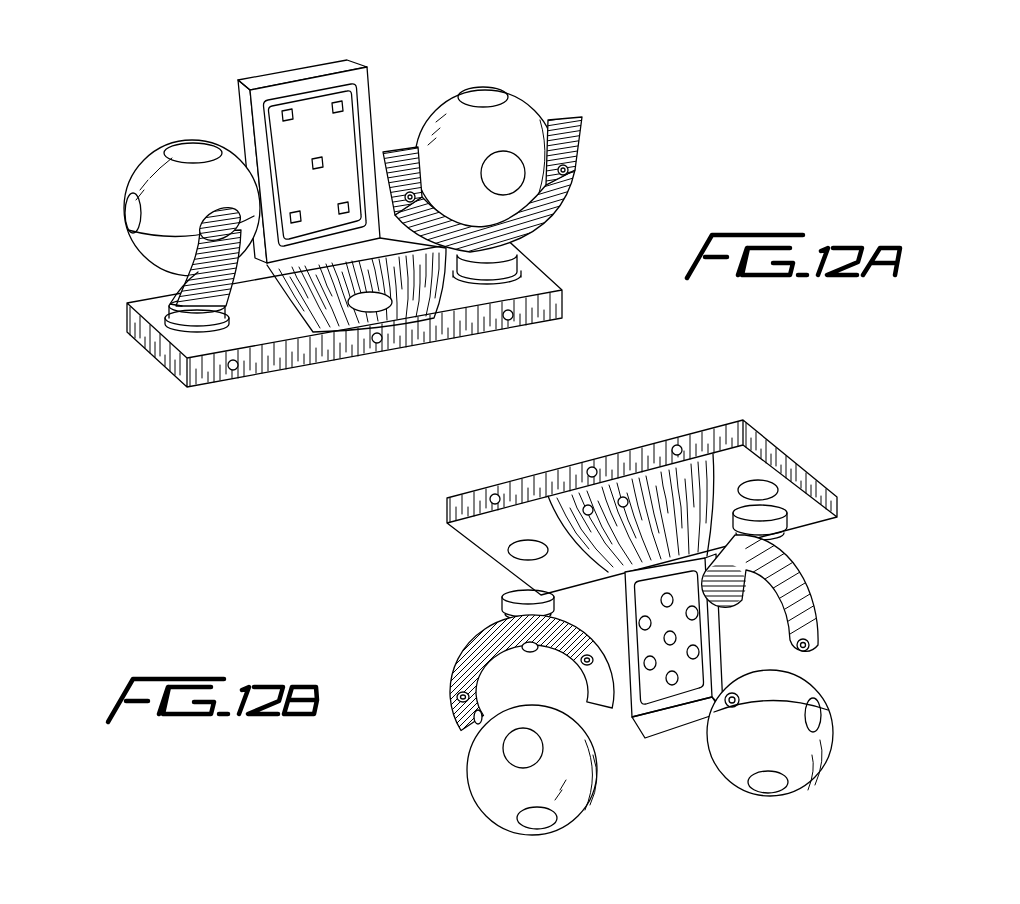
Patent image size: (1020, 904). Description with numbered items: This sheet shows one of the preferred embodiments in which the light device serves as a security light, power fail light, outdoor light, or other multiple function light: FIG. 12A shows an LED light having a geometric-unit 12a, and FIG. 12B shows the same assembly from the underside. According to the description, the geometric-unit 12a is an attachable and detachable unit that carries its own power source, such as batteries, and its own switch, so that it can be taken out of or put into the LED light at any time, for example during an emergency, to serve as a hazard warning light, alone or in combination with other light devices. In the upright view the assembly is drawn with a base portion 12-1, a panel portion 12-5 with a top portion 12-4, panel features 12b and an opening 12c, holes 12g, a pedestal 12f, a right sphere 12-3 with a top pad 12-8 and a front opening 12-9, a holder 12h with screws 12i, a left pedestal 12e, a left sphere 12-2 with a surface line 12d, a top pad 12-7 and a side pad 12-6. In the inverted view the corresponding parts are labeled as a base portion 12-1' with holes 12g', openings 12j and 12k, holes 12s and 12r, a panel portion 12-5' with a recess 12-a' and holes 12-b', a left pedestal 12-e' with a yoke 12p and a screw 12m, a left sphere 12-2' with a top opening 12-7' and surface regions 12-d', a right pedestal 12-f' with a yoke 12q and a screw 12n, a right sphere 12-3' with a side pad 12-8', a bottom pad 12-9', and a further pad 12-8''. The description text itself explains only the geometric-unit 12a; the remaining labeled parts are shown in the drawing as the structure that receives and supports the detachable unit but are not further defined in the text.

In FIG. 12A, the base plate 12-1 is at (324, 331).
In FIG. 12A, the panel top face / bottom face 12-4 is at (265, 80).
In FIG. 12B, the panel top face / bottom face 12-4 is at (673, 742).
In FIG. 12A, the upright panel 12-5 is at (259, 137).
In FIG. 12A, the geometric-unit 12a is at (353, 93).
In FIG. 12A, the panel apertures 12b is at (283, 115).
In FIG. 12A, the opening in curved strip 12c is at (378, 303).
In FIG. 12A, the fastener holes 12g is at (370, 373).
In FIG. 12A, the right pedestal 12f is at (508, 250).
In FIG. 12A, the right sphere 12-3 is at (530, 161).
In FIG. 12A, the top pad of right sphere 12-8 is at (442, 76).
In FIG. 12A, the front opening of right sphere 12-9 is at (531, 117).
In FIG. 12A, the clamp cup 12h is at (567, 137).
In FIG. 12A, the clamp screws 12i is at (575, 168).
In FIG. 12A, the left pedestal 12e is at (177, 317).
In FIG. 12A, the left sphere 12-2 is at (153, 196).
In FIG. 12A, the sphere parting line 12d is at (155, 247).
In FIG. 12A, the top pad of left sphere 12-7 is at (135, 103).
In FIG. 12A, the side pad 12-6 is at (130, 207).
In FIG. 12B, the side pad 12-6 is at (528, 820).
In FIG. 12B, the base plate (inverted) 12-1' is at (642, 474).
In FIG. 12B, the fastener holes 12g' is at (535, 424).
In FIG. 12B, the left opening in plate 12j is at (523, 548).
In FIG. 12B, the right opening in plate 12k is at (765, 490).
In FIG. 12B, the hole in curved strip 12s is at (585, 508).
In FIG. 12B, the hole in curved strip 12r is at (625, 498).
In FIG. 12B, the hanging panel 12-5' is at (660, 682).
In FIG. 12B, the panel recess 12-a' is at (612, 637).
In FIG. 12B, the panel holes 12-b' is at (633, 639).
In FIG. 12B, the left pedestal 12-e' is at (472, 606).
In FIG. 12B, the left yoke 12p is at (478, 660).
In FIG. 12B, the yoke screw 12m is at (470, 720).
In FIG. 12B, the left sphere 12-2' is at (474, 770).
In FIG. 12B, the top opening of left sphere 12-7' is at (431, 749).
In FIG. 12B, the sphere surface 12-d' is at (729, 776).
In FIG. 12B, the right pedestal 12-f' is at (811, 525).
In FIG. 12B, the right yoke 12q is at (800, 585).
In FIG. 12B, the yoke screw 12n is at (805, 645).
In FIG. 12B, the right sphere 12-3' is at (803, 751).
In FIG. 12B, the side pad of right sphere 12-8' is at (857, 735).
In FIG. 12B, the bottom pad of right sphere 12-9' is at (752, 824).
In FIG. 12B, the pad 12-8'' is at (334, 899).